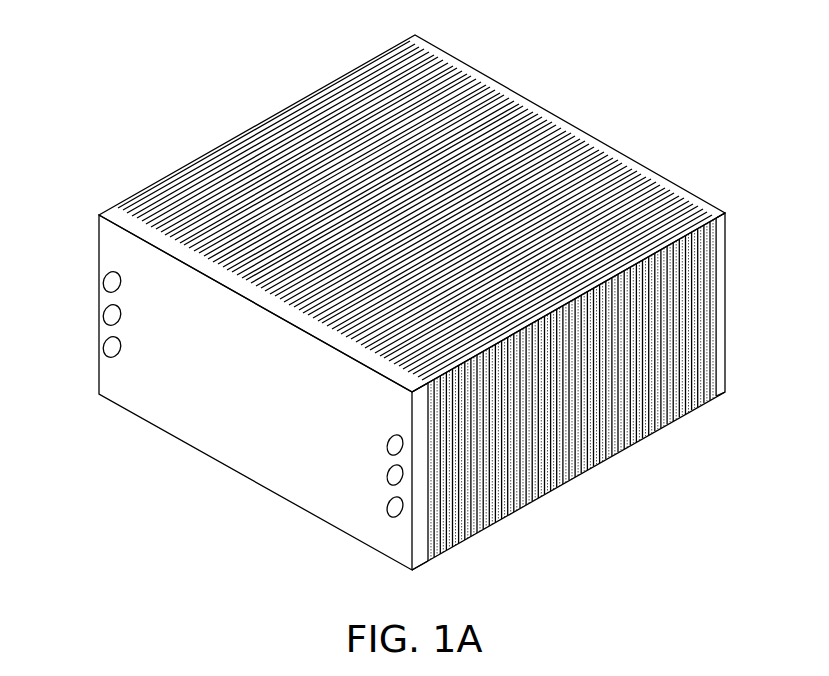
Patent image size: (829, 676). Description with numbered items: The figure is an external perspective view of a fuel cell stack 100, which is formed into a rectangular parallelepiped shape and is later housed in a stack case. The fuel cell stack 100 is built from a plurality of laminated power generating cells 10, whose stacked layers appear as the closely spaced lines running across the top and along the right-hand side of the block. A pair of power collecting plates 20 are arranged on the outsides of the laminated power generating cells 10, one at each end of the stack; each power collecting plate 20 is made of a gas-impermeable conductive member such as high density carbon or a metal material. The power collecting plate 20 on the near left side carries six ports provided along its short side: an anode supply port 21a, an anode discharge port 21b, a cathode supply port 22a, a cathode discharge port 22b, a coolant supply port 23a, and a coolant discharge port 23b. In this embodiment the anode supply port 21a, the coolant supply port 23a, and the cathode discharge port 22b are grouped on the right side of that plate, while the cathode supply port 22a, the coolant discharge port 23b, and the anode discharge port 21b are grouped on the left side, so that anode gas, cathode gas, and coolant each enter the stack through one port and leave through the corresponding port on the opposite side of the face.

The fuel cell stack 100 is at (612, 83).
The power generating cells 10 is at (553, 488).
The power collecting plates 20 is at (423, 556).
The anode supply port 21a is at (394, 446).
The anode discharge port 21b is at (112, 347).
The cathode supply port 22a is at (112, 282).
The cathode discharge port 22b is at (394, 507).
The coolant supply port 23a is at (394, 476).
The coolant discharge port 23b is at (112, 315).